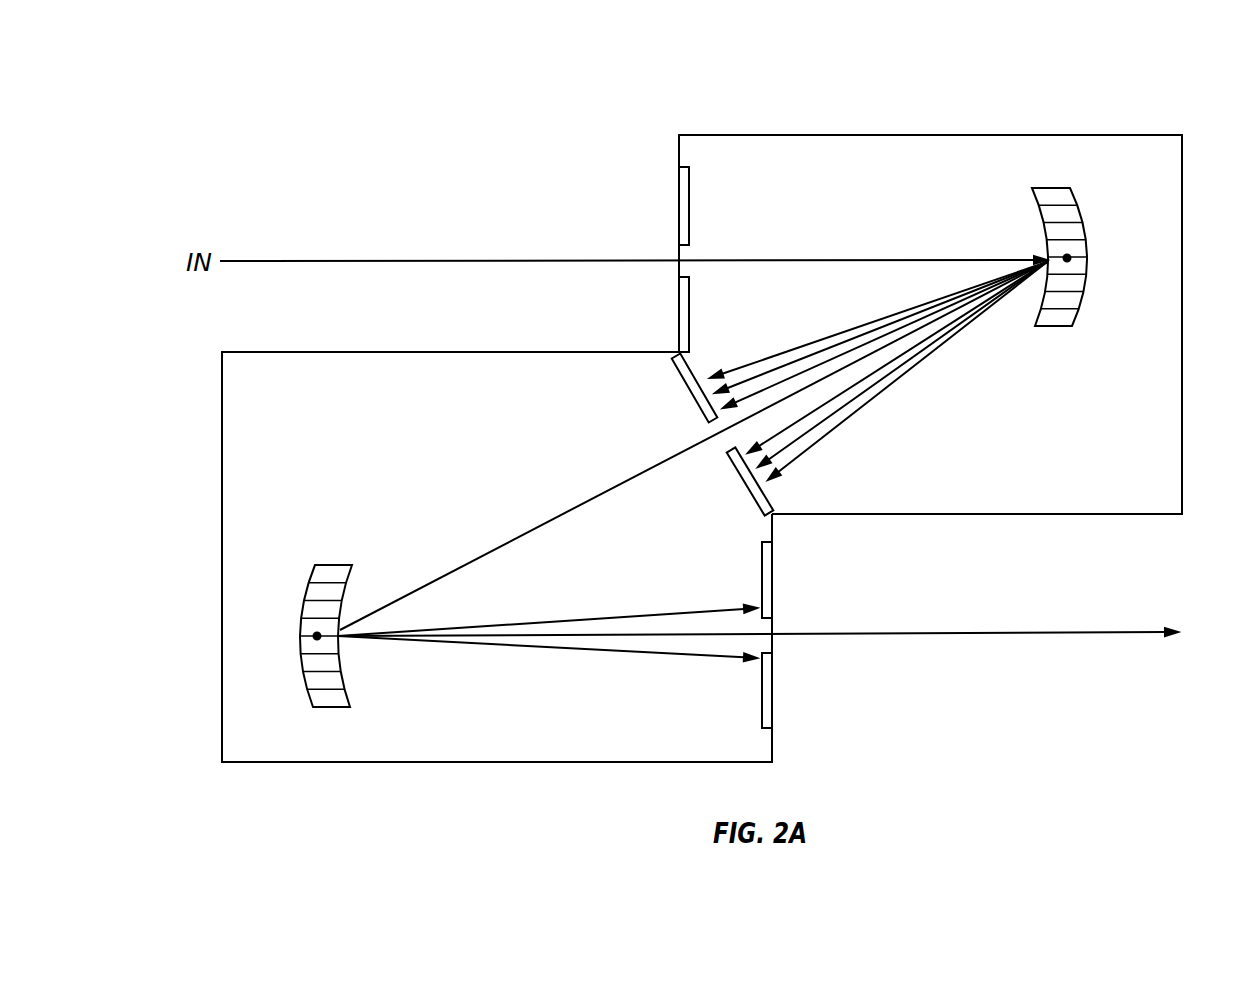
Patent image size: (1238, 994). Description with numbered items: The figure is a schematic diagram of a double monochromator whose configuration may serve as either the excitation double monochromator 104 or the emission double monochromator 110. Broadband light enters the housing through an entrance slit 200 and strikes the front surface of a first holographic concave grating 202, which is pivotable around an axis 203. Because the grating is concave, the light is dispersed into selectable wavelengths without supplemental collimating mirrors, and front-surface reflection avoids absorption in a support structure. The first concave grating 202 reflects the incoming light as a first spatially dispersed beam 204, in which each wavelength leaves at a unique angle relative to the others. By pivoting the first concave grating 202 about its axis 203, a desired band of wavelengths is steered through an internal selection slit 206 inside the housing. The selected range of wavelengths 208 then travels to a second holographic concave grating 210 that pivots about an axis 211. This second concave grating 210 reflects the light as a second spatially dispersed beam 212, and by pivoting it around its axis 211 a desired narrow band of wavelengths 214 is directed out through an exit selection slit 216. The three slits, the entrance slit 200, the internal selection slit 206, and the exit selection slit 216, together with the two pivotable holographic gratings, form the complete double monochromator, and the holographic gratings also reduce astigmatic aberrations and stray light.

The excitation double monochromator 104 is at (1035, 95).
The emission double monochromator 110 is at (702, 414).
The slit 200 is at (690, 253).
The first holographic concave grating 202 is at (1055, 322).
The axis 203 is at (1069, 257).
The first spatially dispersed beam 204 is at (903, 375).
The internal selection slit 206 is at (723, 440).
The selected range of wavelengths 208 is at (577, 502).
The second holographic concave grating 210 is at (337, 572).
The axis 211 is at (315, 635).
The second spatially dispersed beam 212 is at (572, 640).
The desired narrow band of wavelengths 214 is at (947, 631).
The exit selection slit 216 is at (767, 640).